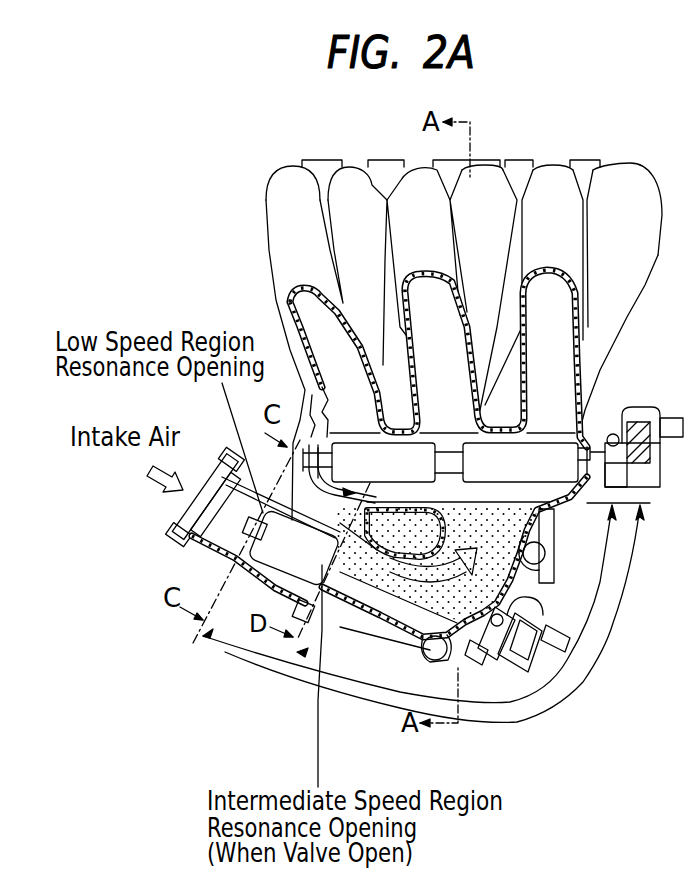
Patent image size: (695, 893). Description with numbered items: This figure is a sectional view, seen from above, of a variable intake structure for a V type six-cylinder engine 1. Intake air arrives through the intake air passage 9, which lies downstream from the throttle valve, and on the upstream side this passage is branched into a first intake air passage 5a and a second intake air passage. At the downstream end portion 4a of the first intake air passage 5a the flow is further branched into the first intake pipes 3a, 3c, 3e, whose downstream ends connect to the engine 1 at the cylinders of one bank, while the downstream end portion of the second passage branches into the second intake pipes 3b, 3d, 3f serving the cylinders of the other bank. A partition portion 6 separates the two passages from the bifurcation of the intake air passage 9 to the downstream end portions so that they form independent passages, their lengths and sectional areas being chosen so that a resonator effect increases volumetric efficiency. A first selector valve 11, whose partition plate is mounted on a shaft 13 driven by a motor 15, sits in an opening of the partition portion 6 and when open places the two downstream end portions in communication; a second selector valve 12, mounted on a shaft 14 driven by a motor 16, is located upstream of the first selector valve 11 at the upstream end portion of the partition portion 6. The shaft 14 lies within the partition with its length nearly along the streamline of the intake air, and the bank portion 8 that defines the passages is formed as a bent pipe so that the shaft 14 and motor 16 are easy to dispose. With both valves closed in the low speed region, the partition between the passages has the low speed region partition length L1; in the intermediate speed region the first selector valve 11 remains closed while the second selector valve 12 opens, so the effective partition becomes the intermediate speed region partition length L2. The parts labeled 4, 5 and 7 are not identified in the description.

The engine 1 is at (641, 485).
The intake pipe 3a is at (277, 180).
The intake pipe 3b is at (348, 178).
The intake pipe 3c is at (415, 178).
The intake pipe 3d is at (485, 178).
The intake pipe 3e is at (547, 178).
The intake pipe 3f is at (612, 178).
The surge tank 4 is at (508, 557).
The downstream end portion of first intake air passage 4a is at (605, 345).
The resonance chamber 5 is at (689, 569).
The first intake air passage 5a is at (417, 562).
The partition portion 6 is at (550, 527).
The intake duct 7 is at (205, 560).
The bank portion 8 is at (375, 625).
The intake air passage 9 is at (197, 503).
The first selector valve 11 is at (534, 447).
The second selector valve 12 is at (321, 393).
The shaft 13 is at (583, 445).
The shaft 14 is at (265, 490).
The motor 15 is at (642, 410).
The motor 16 is at (538, 608).
The low speed region partition length L1 is at (567, 703).
The intermediate speed region partition length L2 is at (580, 640).